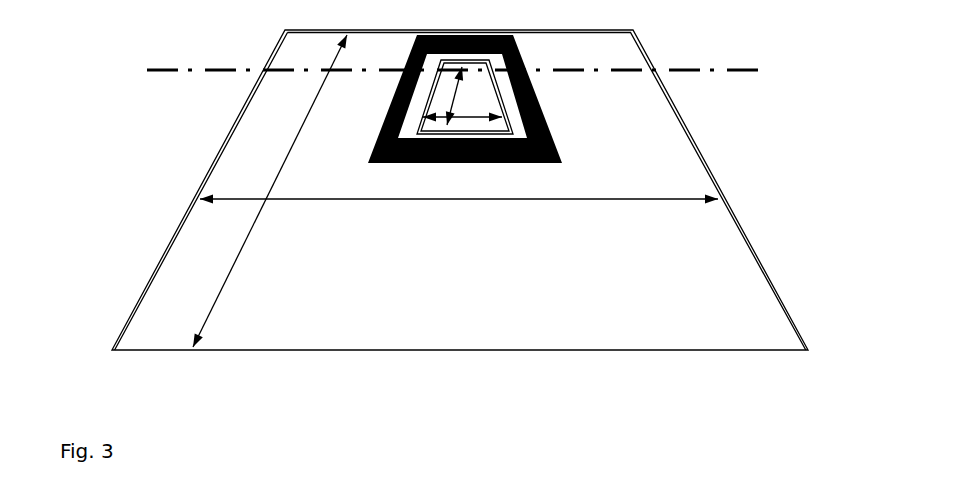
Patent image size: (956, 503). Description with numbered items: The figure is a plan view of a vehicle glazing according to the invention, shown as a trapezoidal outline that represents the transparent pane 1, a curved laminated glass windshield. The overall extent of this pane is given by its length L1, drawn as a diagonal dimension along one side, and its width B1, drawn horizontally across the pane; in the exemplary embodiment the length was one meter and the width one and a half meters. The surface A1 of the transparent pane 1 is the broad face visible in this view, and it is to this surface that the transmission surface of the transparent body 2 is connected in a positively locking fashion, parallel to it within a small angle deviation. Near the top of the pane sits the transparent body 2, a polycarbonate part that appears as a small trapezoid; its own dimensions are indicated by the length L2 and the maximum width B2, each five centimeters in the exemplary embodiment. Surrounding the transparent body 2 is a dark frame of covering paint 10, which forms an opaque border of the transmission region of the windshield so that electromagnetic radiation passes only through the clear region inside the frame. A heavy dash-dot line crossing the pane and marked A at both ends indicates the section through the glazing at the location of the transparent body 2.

The transparent pane 1 is at (228, 148).
The transparent body 2 is at (440, 90).
The covering paint 10 is at (558, 165).
The section line A- A is at (456, 56).
The surface A1 is at (578, 300).
The length L1 is at (270, 191).
The width B1 is at (459, 214).
The length L2 is at (465, 96).
The maximum width B2 is at (462, 109).